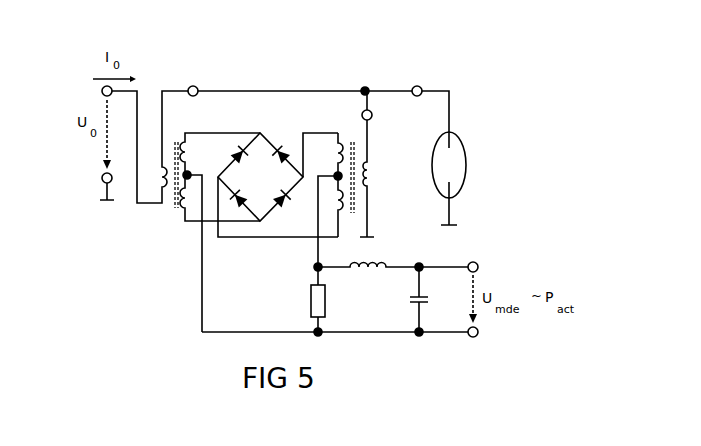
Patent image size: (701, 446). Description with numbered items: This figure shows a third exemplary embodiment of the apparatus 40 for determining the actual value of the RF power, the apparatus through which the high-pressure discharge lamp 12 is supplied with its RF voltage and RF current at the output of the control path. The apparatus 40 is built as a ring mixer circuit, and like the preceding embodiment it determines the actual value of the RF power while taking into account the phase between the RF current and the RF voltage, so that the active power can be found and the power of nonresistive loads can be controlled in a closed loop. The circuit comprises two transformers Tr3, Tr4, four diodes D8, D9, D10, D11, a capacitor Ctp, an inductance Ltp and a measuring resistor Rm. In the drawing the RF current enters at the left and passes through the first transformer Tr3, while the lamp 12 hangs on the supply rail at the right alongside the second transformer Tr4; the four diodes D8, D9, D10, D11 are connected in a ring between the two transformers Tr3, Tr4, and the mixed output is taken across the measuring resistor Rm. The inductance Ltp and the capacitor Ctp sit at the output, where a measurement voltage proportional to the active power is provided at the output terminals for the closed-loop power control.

The apparatus for determining the actual value of the RF power 40 is at (268, 83).
The high-pressure discharge lamp 12 is at (460, 178).
The transformer Tr3 is at (205, 232).
The transformer Tr4 is at (346, 179).
The diode D8 is at (284, 146).
The diode D9 is at (290, 207).
The diode D10 is at (241, 191).
The diode D11 is at (225, 151).
The measuring resistor Rm is at (301, 299).
The inductance Ltp is at (393, 282).
The capacitor Ctp is at (429, 299).